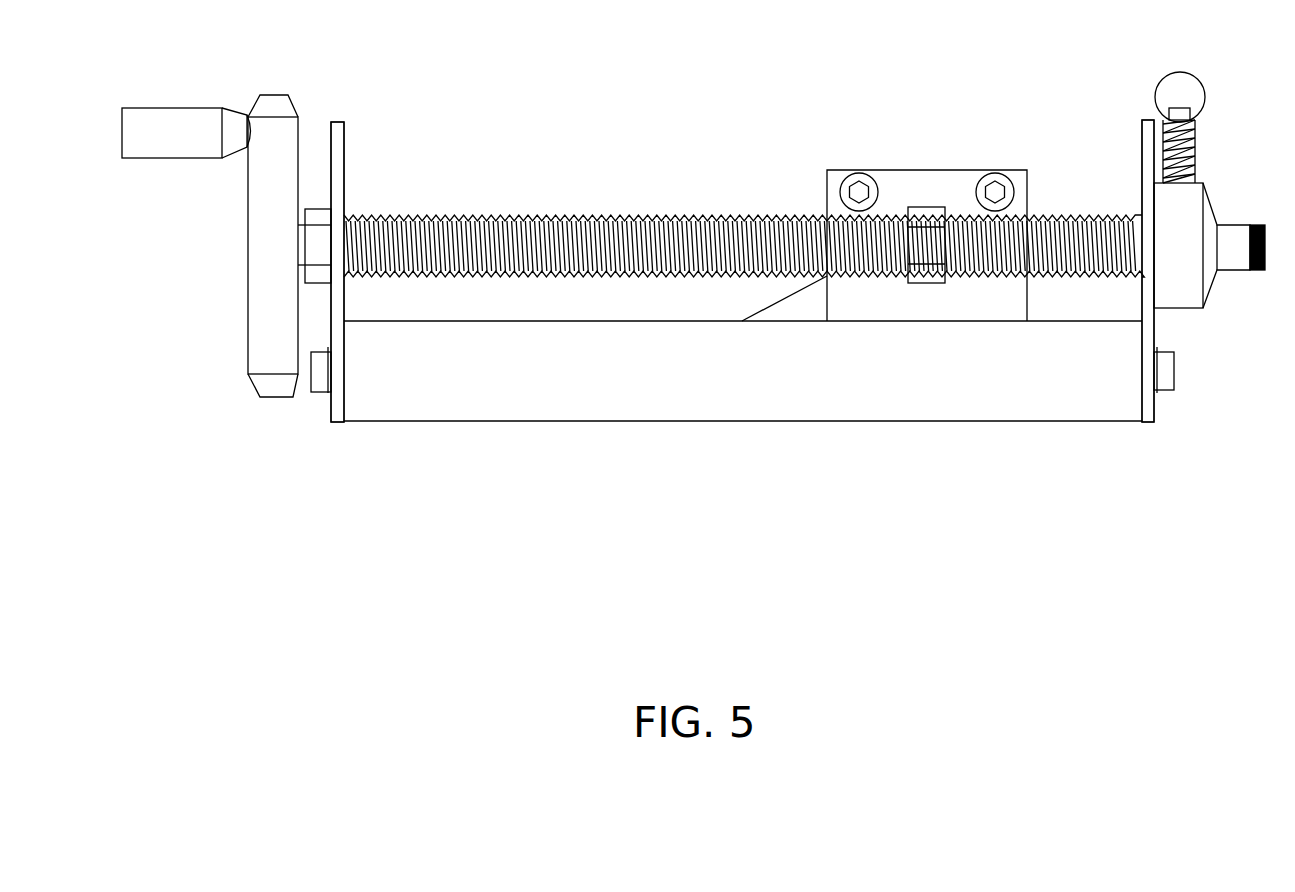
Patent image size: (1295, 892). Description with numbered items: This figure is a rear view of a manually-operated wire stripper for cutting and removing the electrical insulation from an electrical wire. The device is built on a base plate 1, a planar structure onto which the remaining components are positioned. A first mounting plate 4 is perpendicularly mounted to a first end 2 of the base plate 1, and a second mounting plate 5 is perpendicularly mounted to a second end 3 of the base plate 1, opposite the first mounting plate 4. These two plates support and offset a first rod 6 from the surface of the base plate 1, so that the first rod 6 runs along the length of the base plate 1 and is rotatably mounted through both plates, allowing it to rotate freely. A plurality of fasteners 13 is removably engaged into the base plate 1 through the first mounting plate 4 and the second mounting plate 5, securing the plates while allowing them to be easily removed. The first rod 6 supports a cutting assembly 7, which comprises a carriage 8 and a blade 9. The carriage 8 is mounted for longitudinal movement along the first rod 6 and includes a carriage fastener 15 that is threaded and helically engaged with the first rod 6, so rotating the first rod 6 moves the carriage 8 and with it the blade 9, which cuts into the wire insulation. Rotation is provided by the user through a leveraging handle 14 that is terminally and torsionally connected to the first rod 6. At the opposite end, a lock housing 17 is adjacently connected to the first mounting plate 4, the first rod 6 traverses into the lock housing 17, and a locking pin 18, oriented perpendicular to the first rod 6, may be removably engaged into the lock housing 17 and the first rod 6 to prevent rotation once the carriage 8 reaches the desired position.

The base plate 1 is at (765, 437).
The first end 2 is at (1138, 389).
The second end 3 is at (348, 384).
The first mounting plate 4 is at (1147, 122).
The second mounting plate 5 is at (340, 124).
The first rod 6 is at (580, 208).
The cutting assembly 7 is at (813, 195).
The carriage 8 is at (1027, 175).
The blade 9 is at (776, 310).
The plurality of fasteners 13 is at (318, 385).
The leveraging handle 14 is at (130, 114).
The carriage fastener 15 is at (916, 218).
The lock housing 17 is at (1198, 198).
The locking pin 18 is at (1180, 82).